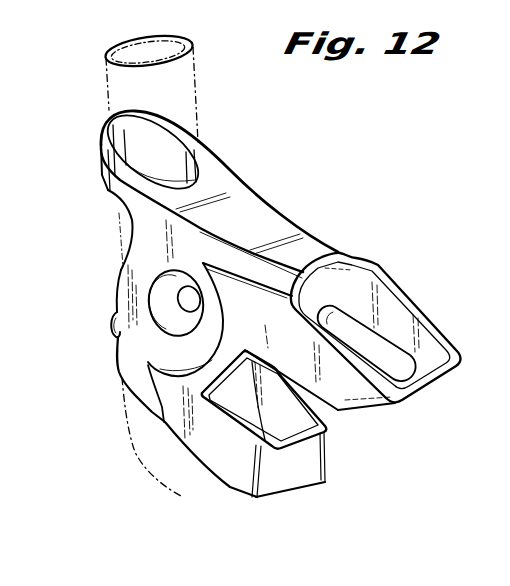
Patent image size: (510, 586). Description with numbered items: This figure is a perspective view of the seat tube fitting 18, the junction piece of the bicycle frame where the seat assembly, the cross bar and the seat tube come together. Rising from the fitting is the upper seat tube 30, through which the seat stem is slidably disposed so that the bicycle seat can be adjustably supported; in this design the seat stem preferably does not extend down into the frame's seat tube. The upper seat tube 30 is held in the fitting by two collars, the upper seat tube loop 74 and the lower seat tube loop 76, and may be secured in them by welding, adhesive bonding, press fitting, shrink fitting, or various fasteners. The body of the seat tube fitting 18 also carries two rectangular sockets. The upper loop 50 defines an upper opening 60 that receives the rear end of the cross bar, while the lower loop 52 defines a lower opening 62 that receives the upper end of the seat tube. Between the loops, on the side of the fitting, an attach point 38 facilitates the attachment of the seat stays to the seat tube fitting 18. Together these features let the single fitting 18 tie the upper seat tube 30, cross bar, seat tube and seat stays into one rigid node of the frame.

The seat tube fitting 18 is at (285, 195).
The upper seat tube 30 is at (98, 72).
The upper seat tube loop 74 is at (122, 192).
The attach point 38 is at (157, 284).
The lower seat tube loop 76 is at (127, 343).
The upper loop 50 is at (434, 322).
The upper opening 60 is at (380, 300).
The lower loop 52 is at (290, 473).
The lower opening 62 is at (296, 421).